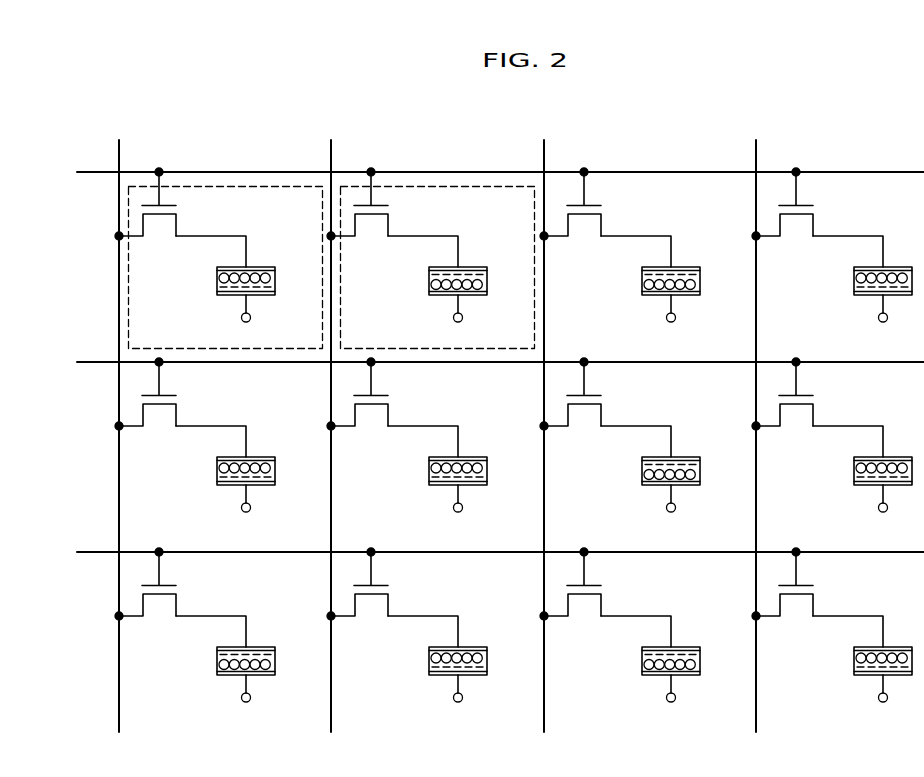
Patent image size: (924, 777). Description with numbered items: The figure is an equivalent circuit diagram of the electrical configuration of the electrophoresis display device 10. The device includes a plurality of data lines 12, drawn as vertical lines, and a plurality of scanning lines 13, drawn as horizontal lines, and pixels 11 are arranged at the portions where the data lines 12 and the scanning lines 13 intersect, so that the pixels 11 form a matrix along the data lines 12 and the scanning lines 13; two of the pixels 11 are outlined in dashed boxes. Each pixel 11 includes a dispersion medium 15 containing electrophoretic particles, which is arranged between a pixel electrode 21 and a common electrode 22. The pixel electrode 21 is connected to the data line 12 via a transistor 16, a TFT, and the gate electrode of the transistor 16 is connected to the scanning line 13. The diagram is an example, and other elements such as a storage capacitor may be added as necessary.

The electrophoresis display device 10 is at (863, 130).
The pixel 11 is at (332, 236).
The data line 12 is at (449, 415).
The scanning line 13 is at (500, 389).
The dispersion medium 15 is at (539, 471).
The transistor 16 is at (491, 394).
The pixel electrode 21 is at (542, 430).
The common electrode 22 is at (575, 498).